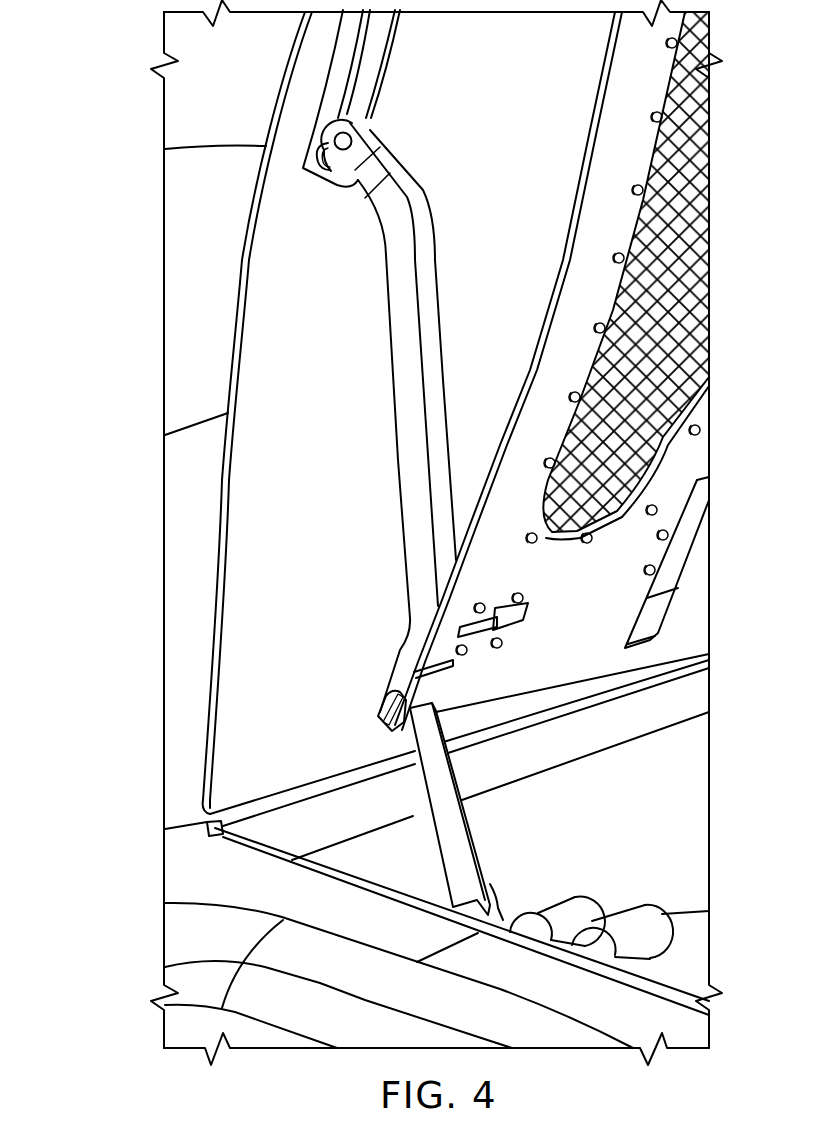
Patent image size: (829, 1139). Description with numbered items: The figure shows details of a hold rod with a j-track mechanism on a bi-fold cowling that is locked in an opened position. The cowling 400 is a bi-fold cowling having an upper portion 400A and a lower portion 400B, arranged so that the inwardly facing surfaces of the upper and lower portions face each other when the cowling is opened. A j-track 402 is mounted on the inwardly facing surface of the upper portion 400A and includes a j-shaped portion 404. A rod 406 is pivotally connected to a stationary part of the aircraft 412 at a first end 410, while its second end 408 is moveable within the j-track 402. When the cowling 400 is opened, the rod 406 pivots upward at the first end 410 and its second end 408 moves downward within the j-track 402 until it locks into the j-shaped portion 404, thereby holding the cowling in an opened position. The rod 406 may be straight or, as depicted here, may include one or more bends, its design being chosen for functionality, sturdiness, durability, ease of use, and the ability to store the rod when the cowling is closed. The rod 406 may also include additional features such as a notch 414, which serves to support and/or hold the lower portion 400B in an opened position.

The cowling 400 is at (213, 349).
The upper portion 400A is at (213, 552).
The lower portion 400B is at (585, 154).
The j-track 402 is at (392, 51).
The j-shaped portion 404 is at (325, 186).
The rod 406 is at (397, 460).
The second end 408 is at (388, 128).
The first end 410 is at (511, 901).
The stationary part of the aircraft 412 is at (558, 973).
The notch 414 is at (377, 702).